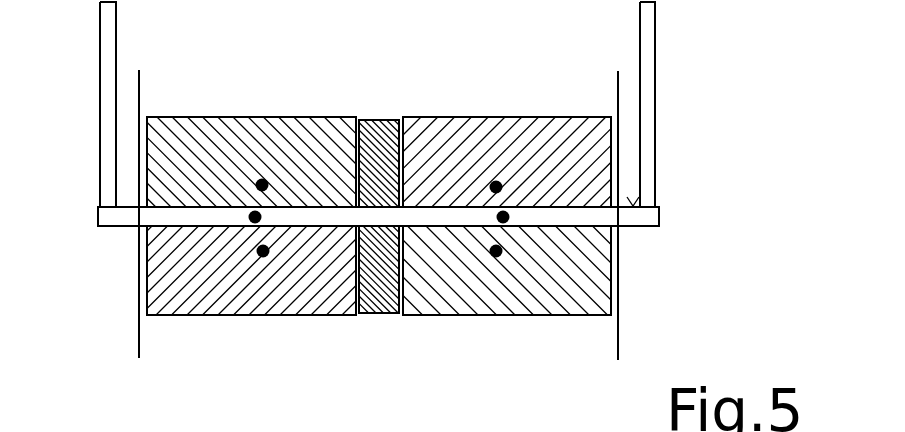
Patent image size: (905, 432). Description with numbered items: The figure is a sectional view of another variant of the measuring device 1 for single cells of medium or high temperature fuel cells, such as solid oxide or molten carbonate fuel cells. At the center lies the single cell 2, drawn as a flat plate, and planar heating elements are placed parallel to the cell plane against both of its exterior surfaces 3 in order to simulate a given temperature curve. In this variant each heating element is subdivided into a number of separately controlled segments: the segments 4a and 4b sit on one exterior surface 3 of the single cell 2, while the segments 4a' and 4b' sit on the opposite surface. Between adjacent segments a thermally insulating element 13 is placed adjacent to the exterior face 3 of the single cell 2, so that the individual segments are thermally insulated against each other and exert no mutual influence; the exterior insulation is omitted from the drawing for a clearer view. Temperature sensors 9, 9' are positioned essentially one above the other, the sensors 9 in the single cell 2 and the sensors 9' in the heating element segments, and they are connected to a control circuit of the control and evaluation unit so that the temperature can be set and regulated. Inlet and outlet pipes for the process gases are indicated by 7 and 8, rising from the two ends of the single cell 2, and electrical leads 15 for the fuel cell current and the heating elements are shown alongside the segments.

The measuring device 1 is at (263, 110).
The single cell 2 is at (637, 217).
The exterior surface 3 is at (642, 205).
The heating element segment 4a is at (251, 117).
The heating element segment 4a' is at (251, 308).
The heating element segment 4b is at (507, 117).
The heating element segment 4b' is at (507, 308).
The inlet pipe 7 is at (104, 119).
The outlet pipe 8 is at (647, 95).
The temperature sensor 9 is at (406, 301).
The temperature sensor 9' is at (391, 232).
The thermally insulating element 13 is at (380, 135).
The electrical lead 15 is at (141, 97).